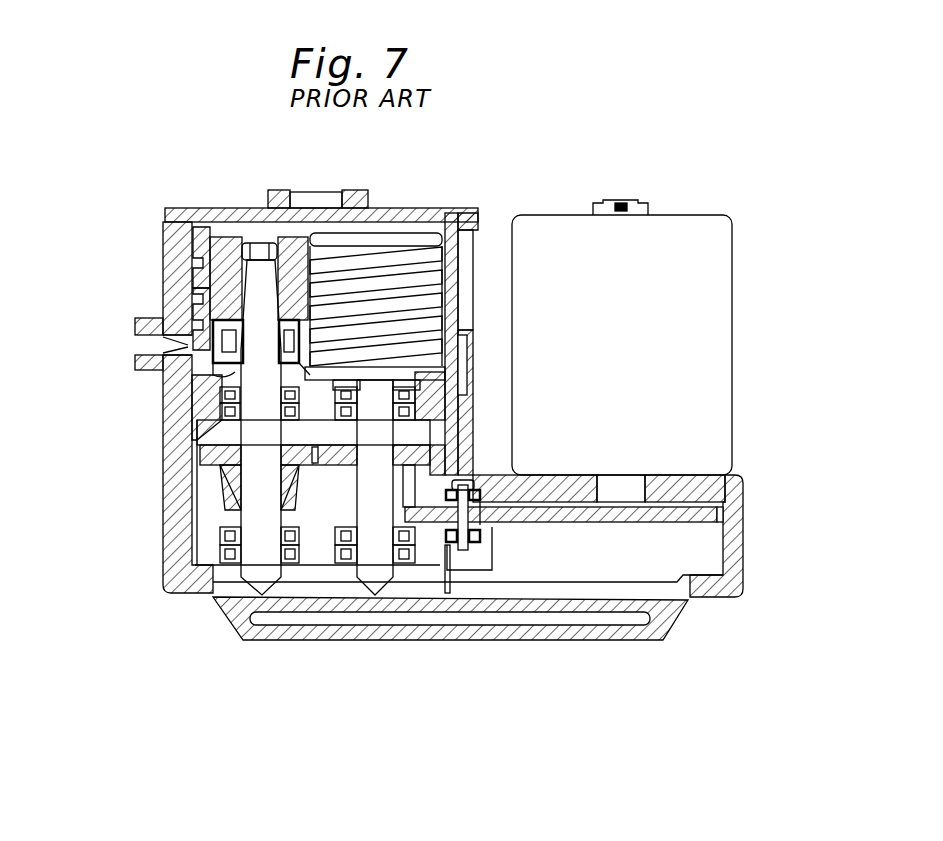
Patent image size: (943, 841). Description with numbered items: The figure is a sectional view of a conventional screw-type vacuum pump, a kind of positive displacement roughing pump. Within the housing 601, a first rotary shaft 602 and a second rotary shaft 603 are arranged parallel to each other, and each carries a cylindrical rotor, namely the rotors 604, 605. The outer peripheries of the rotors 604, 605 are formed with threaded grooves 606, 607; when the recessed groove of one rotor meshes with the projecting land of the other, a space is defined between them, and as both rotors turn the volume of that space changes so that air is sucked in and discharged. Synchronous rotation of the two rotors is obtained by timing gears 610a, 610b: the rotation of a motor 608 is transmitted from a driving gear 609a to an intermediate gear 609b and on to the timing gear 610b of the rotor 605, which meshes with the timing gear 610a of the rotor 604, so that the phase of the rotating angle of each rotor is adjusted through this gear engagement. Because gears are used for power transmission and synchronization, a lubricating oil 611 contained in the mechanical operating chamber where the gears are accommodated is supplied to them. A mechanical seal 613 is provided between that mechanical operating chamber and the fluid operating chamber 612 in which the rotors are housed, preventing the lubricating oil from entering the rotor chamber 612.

The housing 601 is at (455, 260).
The first rotary shaft 602 is at (260, 543).
The second rotary shaft 603 is at (380, 547).
The cylindrical rotor 604 is at (228, 240).
The cylindrical rotor 605 is at (382, 245).
The threaded groove 606 is at (197, 258).
The threaded groove 607 is at (443, 264).
The motor 608 is at (702, 311).
The driving gear 609a is at (662, 518).
The intermediate gear 609b is at (513, 517).
The timing gear 610a is at (307, 460).
The timing gear 610b is at (333, 460).
The lubricating oil 611 is at (610, 592).
The fluid operating chamber 612 is at (183, 291).
The mechanical seal 613 is at (225, 372).